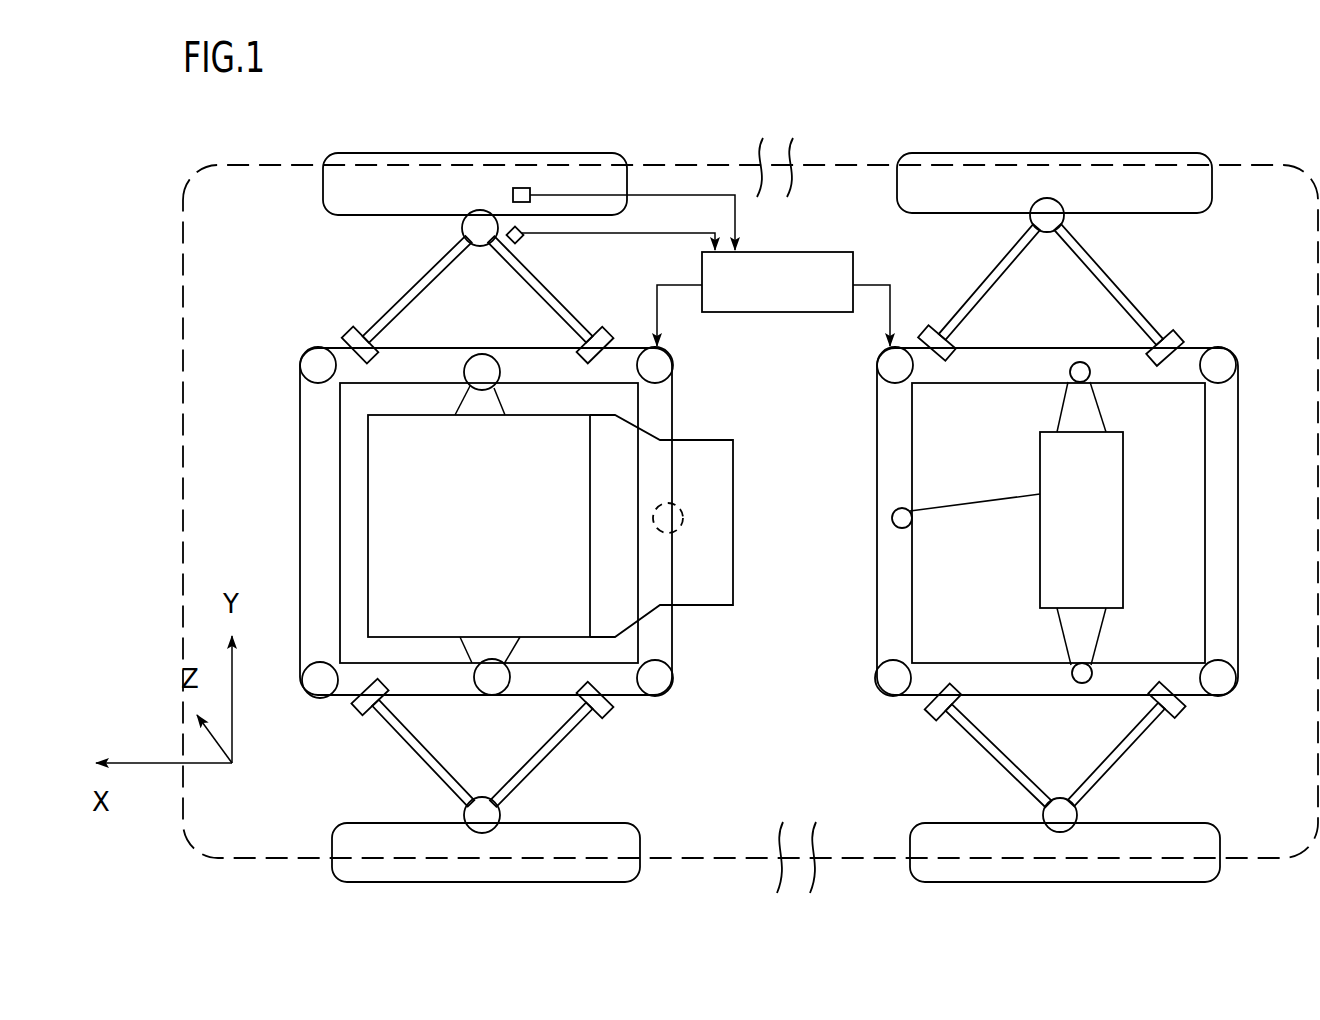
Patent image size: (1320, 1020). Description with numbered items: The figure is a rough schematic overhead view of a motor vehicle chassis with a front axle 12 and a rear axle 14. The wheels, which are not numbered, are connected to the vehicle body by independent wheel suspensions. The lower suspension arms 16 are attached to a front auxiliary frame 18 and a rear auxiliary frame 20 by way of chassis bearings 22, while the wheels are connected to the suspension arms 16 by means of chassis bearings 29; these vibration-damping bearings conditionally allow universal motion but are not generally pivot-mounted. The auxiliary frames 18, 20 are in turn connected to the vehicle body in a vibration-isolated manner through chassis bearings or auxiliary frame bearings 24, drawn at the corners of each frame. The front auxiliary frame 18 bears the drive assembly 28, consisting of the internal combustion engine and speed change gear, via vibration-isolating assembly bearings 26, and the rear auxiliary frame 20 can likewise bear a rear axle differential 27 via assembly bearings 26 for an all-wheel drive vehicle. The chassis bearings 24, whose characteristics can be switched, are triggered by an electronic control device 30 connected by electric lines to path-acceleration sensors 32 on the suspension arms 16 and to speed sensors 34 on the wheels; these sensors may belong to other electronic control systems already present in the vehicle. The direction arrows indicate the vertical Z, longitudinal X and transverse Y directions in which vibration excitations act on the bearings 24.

The front axle 12 is at (305, 302).
The rear axle 14 is at (897, 721).
The lower suspension arms 16 is at (434, 271).
The front auxiliary frame 18 is at (297, 483).
The rear auxiliary frame 20 is at (914, 597).
The chassis bearings 22 is at (595, 345).
The auxiliary frame bearings 24 is at (316, 357).
The assembly bearings 26 is at (478, 378).
The rear axle differential 27 is at (1063, 514).
The drive assembly 28 is at (550, 537).
The chassis bearings 29 is at (468, 226).
The electronic control device 30 is at (757, 300).
The path-acceleration sensors 32 is at (522, 240).
The speed sensors 34 is at (520, 187).